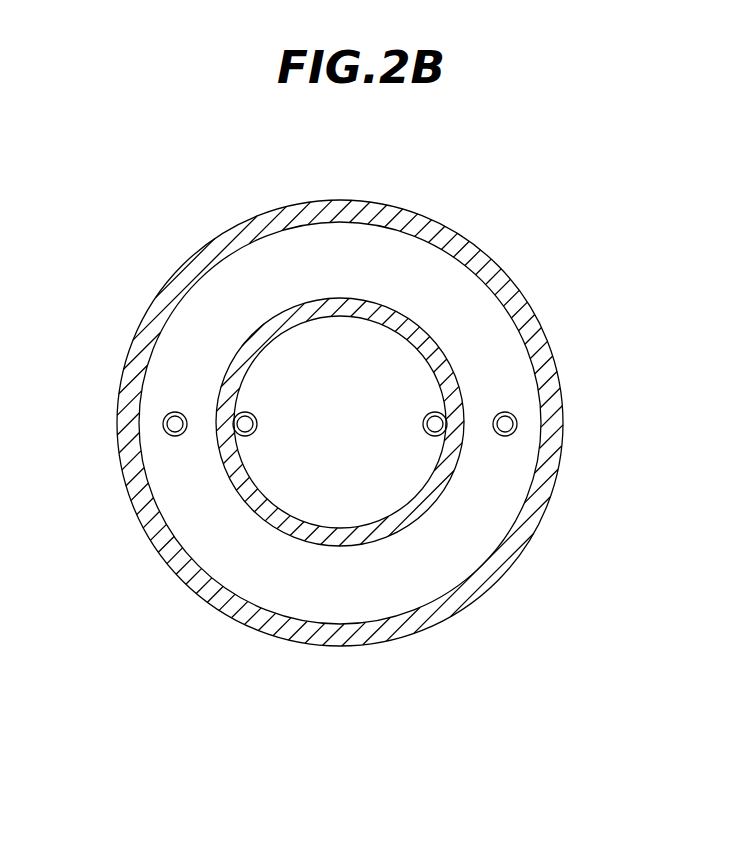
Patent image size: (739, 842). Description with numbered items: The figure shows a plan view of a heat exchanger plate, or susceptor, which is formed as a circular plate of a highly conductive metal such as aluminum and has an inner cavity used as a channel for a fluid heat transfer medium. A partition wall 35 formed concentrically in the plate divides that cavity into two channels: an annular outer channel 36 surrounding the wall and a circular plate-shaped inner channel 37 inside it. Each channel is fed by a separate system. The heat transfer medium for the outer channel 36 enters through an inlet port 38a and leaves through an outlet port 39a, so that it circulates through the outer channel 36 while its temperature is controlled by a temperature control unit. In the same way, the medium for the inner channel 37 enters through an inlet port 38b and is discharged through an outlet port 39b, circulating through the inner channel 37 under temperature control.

The partition wall 35 is at (380, 423).
The outer channel 36 is at (473, 313).
The inner channel 37 is at (338, 343).
The inlet port 38a is at (505, 437).
The inlet port 38b is at (435, 437).
The outlet port 39a is at (175, 437).
The outlet port 39b is at (245, 437).